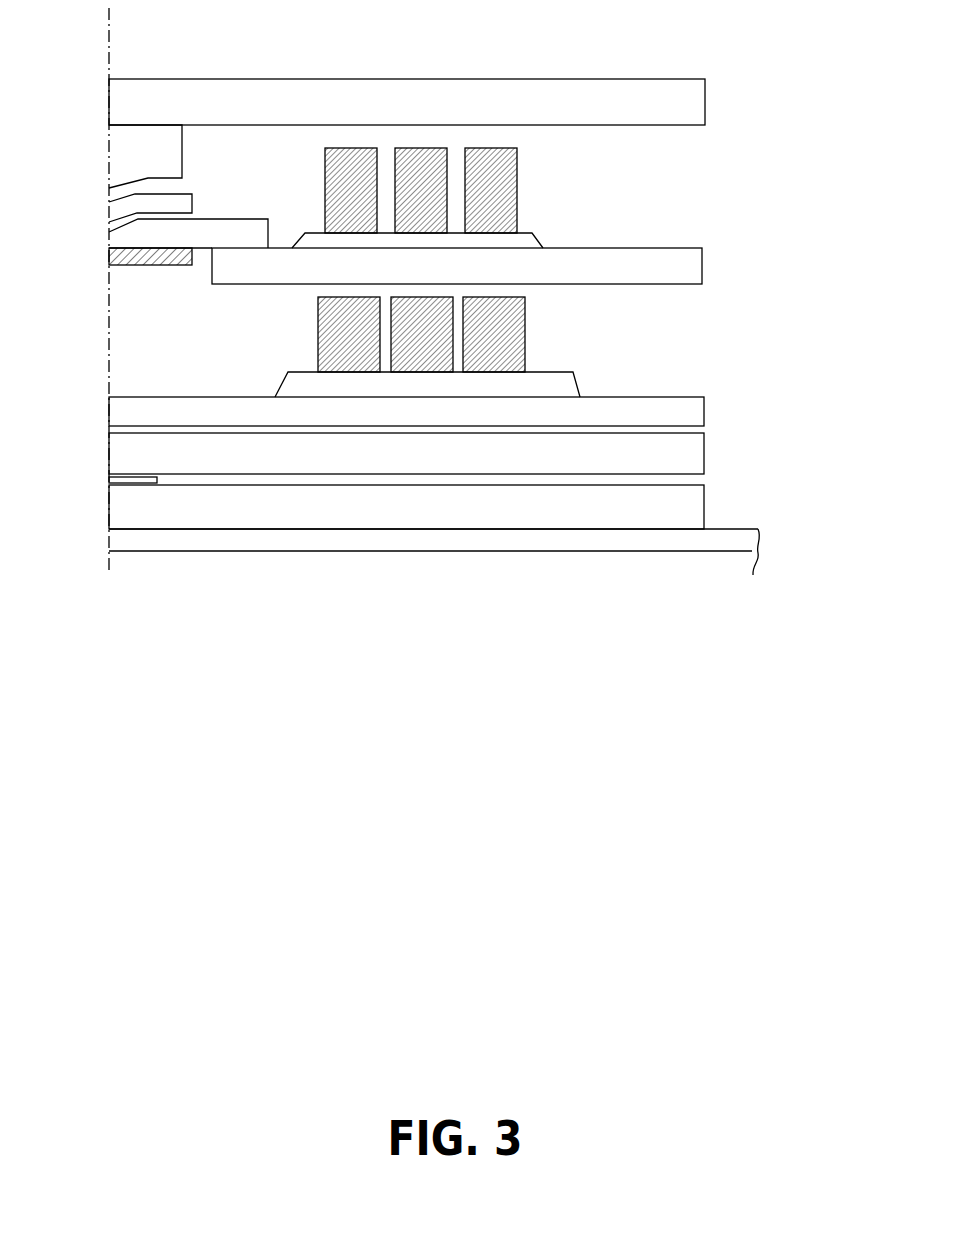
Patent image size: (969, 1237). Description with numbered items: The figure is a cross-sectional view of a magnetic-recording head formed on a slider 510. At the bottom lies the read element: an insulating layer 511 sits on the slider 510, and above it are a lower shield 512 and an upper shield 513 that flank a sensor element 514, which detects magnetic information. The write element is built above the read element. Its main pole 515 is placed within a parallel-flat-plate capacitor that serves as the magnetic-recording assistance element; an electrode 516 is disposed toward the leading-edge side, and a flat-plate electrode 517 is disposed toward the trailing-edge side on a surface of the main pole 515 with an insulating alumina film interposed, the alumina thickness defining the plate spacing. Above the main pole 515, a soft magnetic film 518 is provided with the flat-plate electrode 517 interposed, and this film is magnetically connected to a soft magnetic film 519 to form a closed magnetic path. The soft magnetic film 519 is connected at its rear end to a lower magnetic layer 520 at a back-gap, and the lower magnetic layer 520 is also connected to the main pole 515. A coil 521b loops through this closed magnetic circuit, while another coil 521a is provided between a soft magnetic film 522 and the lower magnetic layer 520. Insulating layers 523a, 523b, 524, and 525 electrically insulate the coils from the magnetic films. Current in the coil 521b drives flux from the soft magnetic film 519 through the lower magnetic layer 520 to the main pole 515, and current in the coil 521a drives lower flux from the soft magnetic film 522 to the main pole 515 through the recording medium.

The slider 510 is at (353, 602).
The insulating layer 511 is at (527, 551).
The lower shield 512 is at (704, 505).
The upper shield 513 is at (704, 448).
The sensor element 514 is at (123, 489).
The main pole 515 is at (108, 235).
The electrode 516 is at (103, 258).
The flat-plate electrode 517 is at (108, 210).
The soft magnetic film 518 is at (108, 152).
The soft magnetic film 519 is at (570, 79).
The lower magnetic layer 520 is at (702, 267).
The coil 521a is at (525, 322).
The coil 521b is at (517, 177).
The soft magnetic film 522 is at (704, 407).
The insulating layer 523a is at (582, 388).
The insulating layer 523b is at (543, 245).
The insulating layer 524 is at (170, 351).
The insulating layer 525 is at (234, 187).